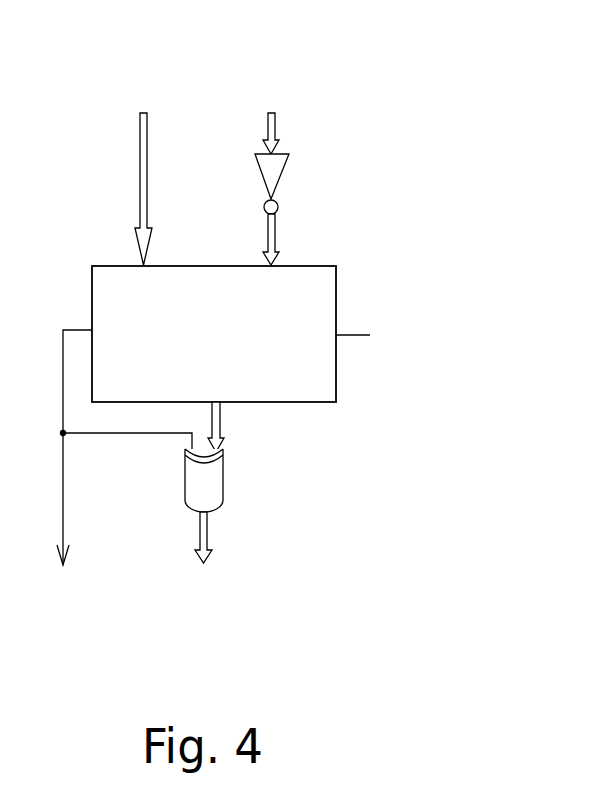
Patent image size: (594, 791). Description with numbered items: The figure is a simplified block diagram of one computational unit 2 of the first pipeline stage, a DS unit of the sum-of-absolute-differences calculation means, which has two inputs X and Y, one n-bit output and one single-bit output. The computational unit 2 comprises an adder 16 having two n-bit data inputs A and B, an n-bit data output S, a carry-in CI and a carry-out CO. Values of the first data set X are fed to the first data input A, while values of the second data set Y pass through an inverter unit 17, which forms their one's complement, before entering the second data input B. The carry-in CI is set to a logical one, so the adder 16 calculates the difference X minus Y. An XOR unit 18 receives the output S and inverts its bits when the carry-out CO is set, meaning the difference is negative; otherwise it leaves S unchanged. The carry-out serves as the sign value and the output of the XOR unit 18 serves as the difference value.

The computational unit 2 is at (460, 133).
The adder 16 is at (327, 267).
The inverter unit 17 is at (280, 173).
The XOR unit 18 is at (223, 481).